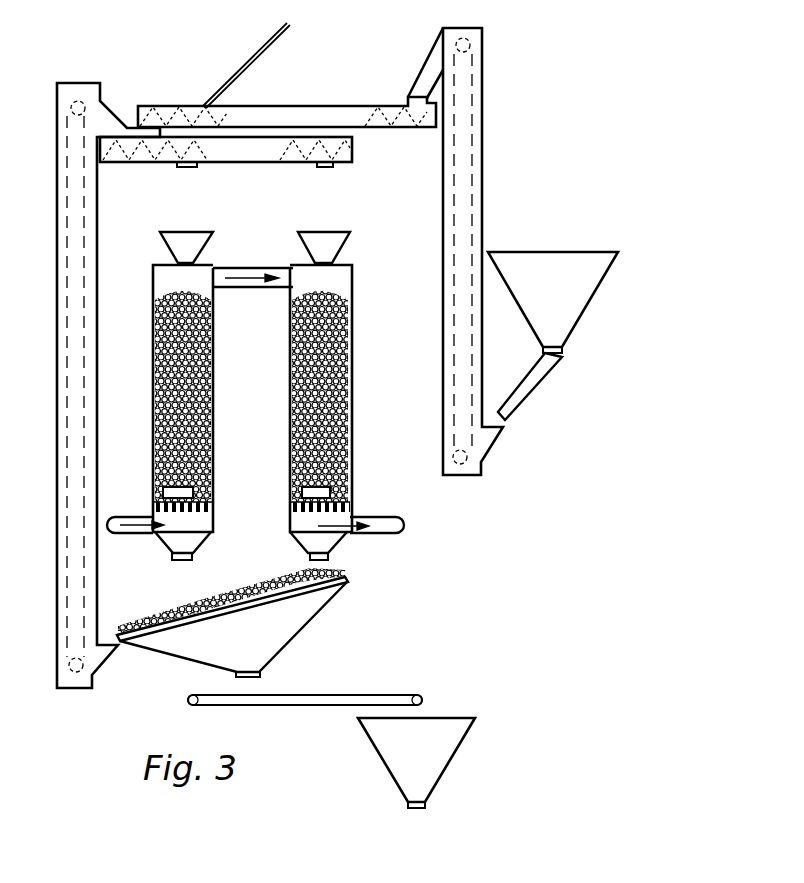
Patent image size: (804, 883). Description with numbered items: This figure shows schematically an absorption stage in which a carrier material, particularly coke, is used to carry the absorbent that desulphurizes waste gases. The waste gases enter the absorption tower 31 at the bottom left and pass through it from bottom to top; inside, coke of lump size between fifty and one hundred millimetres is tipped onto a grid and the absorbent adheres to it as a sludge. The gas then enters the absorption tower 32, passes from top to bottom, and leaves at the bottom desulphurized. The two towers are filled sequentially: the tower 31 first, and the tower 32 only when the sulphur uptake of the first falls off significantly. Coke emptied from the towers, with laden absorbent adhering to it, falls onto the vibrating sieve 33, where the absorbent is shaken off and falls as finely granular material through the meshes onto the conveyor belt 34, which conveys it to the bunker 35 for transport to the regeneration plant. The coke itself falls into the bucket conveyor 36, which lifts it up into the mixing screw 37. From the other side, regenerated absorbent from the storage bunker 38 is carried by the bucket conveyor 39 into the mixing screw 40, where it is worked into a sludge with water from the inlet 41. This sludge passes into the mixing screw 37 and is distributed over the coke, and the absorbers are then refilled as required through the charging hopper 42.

The absorption tower 31 is at (208, 368).
The absorption tower 32 is at (343, 364).
The vibrating sieve 33 is at (247, 646).
The conveyor belt 34 is at (373, 697).
The bunker 35 is at (426, 759).
The bucket conveyor 36 is at (93, 326).
The mixing screw 37 is at (249, 155).
The storage bunker 38 is at (566, 292).
The bucket conveyor 39 is at (478, 181).
The mixing screw 40 is at (334, 108).
The inlet 41 is at (236, 68).
The charging hopper 42 is at (187, 238).